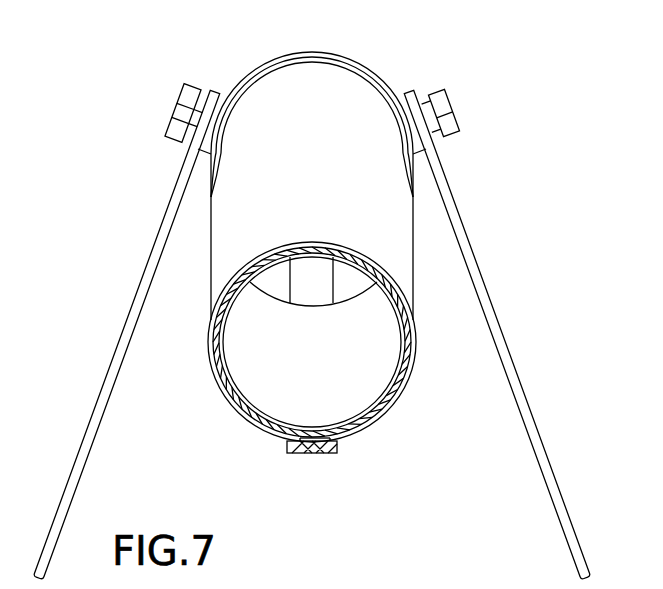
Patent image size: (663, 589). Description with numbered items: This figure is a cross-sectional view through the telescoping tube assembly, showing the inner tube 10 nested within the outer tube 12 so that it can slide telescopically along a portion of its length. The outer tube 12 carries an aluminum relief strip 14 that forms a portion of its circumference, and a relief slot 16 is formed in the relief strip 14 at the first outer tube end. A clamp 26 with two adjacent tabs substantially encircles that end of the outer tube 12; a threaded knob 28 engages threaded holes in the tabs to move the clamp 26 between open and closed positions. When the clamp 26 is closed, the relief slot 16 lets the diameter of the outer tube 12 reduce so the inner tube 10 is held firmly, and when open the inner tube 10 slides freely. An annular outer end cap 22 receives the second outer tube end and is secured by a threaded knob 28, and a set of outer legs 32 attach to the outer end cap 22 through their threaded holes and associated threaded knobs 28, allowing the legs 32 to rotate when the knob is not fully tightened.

The inner tube 10 is at (395, 400).
The outer tube 12 is at (255, 428).
The relief strip 14 is at (328, 453).
The relief slot 16 is at (300, 454).
The outer end cap 22 is at (250, 77).
The clamp 26 is at (228, 400).
The threaded knob 28 is at (185, 108).
The outer legs 32 is at (98, 413).